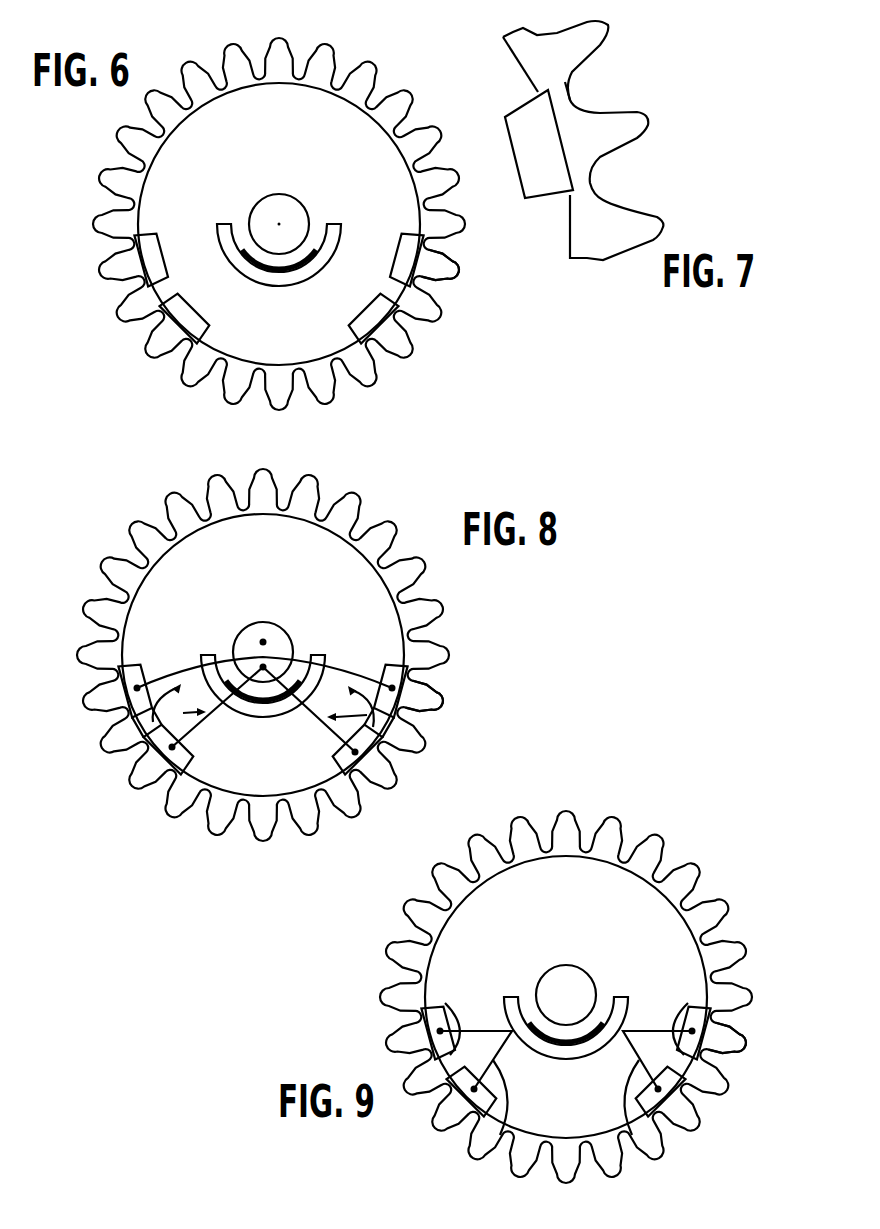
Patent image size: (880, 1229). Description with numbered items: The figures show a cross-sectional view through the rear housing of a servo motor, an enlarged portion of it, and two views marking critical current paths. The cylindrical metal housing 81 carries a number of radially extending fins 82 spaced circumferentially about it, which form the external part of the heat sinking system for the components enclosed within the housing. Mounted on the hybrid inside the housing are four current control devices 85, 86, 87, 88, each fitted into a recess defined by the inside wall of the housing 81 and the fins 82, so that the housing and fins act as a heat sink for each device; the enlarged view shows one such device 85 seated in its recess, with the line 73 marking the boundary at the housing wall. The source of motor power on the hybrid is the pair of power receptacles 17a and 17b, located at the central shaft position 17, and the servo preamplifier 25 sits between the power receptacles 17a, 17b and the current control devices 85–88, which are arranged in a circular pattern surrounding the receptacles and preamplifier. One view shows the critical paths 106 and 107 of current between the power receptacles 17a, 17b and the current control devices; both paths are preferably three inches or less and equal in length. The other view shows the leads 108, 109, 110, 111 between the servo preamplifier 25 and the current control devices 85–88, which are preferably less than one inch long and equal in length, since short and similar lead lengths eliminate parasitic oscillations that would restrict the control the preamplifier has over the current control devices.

In FIG. 6, the power receptacle 17 is at (277, 205).
In FIG. 8, the power receptacle 17 is at (250, 624).
In FIG. 9, the power receptacle 17 is at (582, 995).
In FIG. 8, the power receptacle 17a is at (265, 640).
In FIG. 8, the power receptacle 17b is at (260, 666).
In FIG. 8, the servo preamplifier 25 is at (323, 652).
In FIG. 9, the servo preamplifier 25 is at (617, 992).
In FIG. 7, the pad mounting line 73 is at (553, 92).
In FIG. 6, the housing 81 is at (349, 90).
In FIG. 8, the housing 81 is at (302, 505).
In FIG. 9, the housing 81 is at (637, 862).
In FIG. 6, the fins 82 is at (445, 290).
In FIG. 7, the fins 82 is at (608, 35).
In FIG. 8, the fins 82 is at (435, 700).
In FIG. 9, the fins 82 is at (737, 1043).
In FIG. 6, the current control device 85 is at (413, 250).
In FIG. 7, the current control device 85 is at (549, 150).
In FIG. 6, the current control device 86 is at (382, 318).
In FIG. 6, the current control device 87 is at (175, 310).
In FIG. 6, the current control device 88 is at (152, 272).
In FIG. 8, the critical path 106 is at (158, 730).
In FIG. 8, the critical path 107 is at (388, 730).
In FIG. 9, the lead 108 is at (490, 1062).
In FIG. 9, the lead 109 is at (425, 1006).
In FIG. 9, the lead 110 is at (690, 1000).
In FIG. 9, the lead 111 is at (698, 1090).